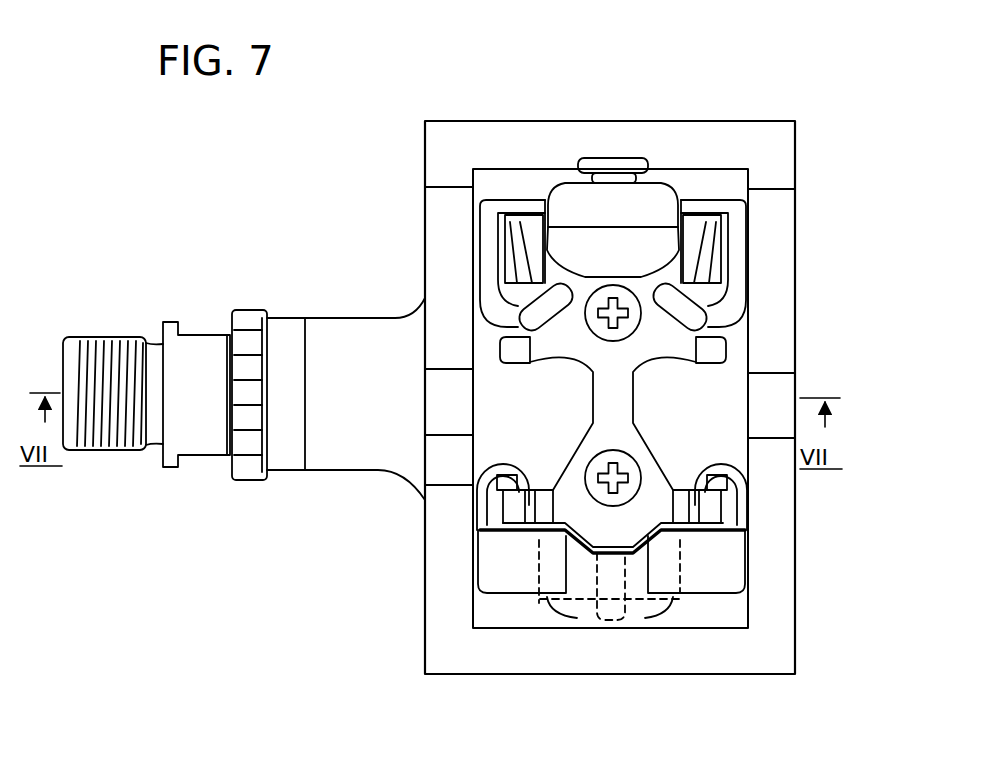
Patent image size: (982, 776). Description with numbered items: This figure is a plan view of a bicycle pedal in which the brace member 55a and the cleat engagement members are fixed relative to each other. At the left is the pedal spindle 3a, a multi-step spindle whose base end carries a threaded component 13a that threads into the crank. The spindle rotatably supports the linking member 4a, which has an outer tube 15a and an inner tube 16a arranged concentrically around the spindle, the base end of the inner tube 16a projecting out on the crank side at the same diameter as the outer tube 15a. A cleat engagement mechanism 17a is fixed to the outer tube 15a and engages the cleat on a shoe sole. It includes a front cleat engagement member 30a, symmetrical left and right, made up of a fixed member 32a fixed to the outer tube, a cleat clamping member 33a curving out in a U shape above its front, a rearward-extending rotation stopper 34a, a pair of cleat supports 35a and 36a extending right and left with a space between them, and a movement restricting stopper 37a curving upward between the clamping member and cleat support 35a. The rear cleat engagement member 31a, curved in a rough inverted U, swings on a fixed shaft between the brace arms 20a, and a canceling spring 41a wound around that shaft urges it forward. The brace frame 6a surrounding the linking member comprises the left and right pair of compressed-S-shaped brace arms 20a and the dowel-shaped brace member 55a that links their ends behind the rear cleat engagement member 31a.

The pedal spindle 3a is at (173, 323).
The linking member 4a is at (468, 334).
The pedal frame 6a is at (457, 108).
The threaded component 13a is at (100, 457).
The outer tube 15a is at (377, 460).
The inner tube 16a is at (282, 462).
The cleat engagement mechanism 17a is at (720, 374).
The brace arms 20a is at (452, 220).
The front cleat engagement member 30a is at (565, 243).
The rear cleat engagement member 31a is at (527, 600).
The fixed member 32a is at (600, 420).
The cleat clamping member 33a is at (648, 247).
The rotation stopper 34a is at (578, 612).
The cleat support 35a is at (500, 352).
The cleat support 36a is at (503, 510).
The movement restricting stopper 37a is at (513, 213).
The canceling spring 41a is at (687, 260).
The brace member 55a is at (641, 138).